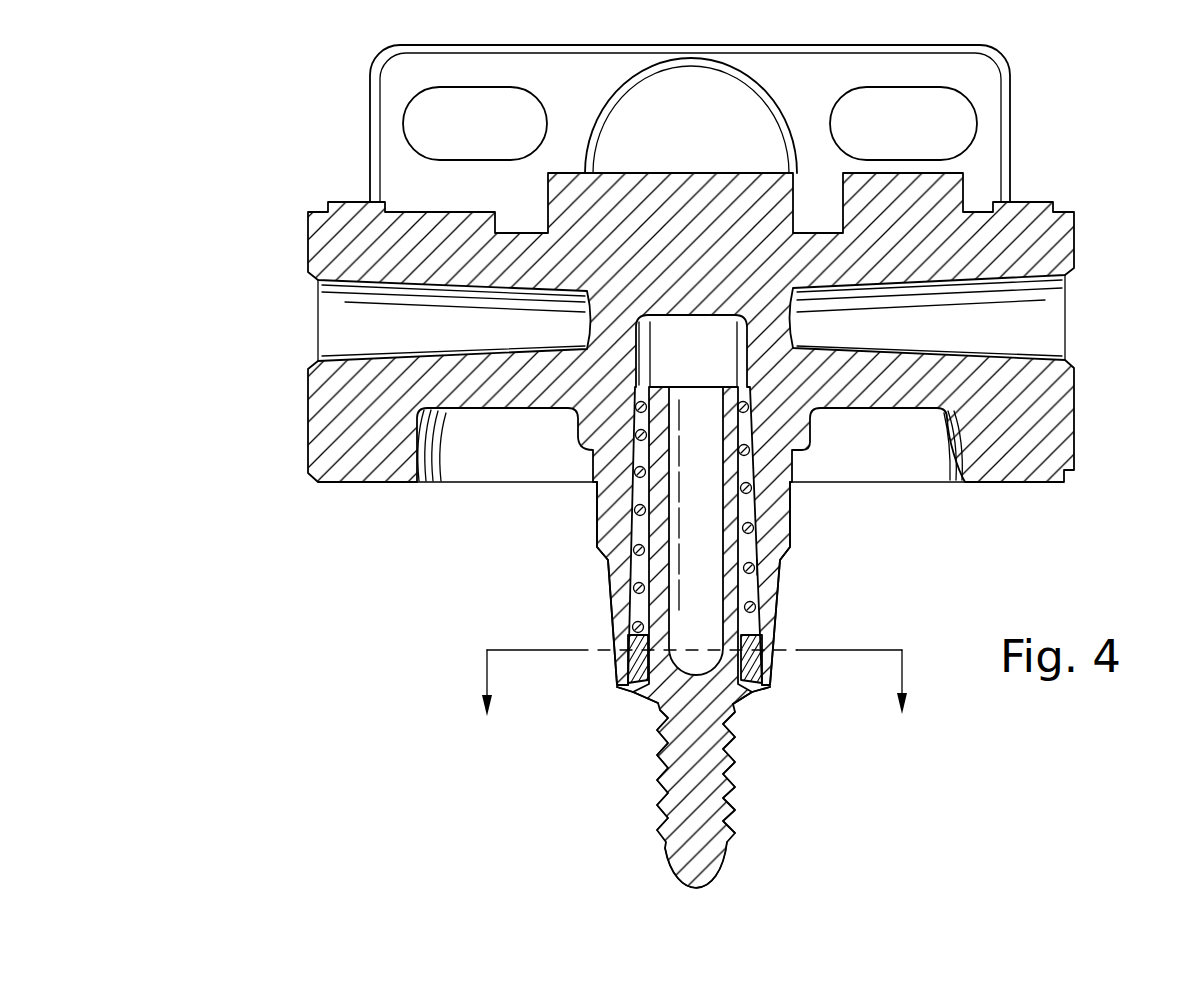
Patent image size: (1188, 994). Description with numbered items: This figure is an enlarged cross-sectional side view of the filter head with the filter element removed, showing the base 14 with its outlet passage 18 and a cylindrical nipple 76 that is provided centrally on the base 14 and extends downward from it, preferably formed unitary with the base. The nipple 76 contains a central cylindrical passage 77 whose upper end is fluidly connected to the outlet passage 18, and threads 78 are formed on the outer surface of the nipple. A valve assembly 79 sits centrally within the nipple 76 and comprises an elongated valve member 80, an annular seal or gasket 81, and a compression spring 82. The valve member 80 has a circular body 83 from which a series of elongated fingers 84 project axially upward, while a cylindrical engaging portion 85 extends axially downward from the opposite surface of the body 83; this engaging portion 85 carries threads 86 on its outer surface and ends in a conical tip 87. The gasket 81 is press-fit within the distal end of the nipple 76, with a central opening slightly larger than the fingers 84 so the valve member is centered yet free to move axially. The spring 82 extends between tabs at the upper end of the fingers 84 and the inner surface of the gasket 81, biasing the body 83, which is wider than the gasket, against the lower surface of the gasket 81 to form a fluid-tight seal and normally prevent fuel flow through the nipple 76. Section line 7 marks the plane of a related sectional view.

The base 14 is at (1064, 243).
The outlet passage 18 is at (313, 313).
The central cylindrical passage 77 is at (706, 368).
The cylindrical nipple 76 is at (586, 538).
The threads 78 is at (780, 530).
The elongated fingers 84 is at (655, 493).
The compression spring 82 is at (747, 565).
The circular body 83 is at (625, 686).
The annular seal or gasket 81 is at (767, 663).
The valve member 80 is at (633, 690).
The valve assembly 79 is at (752, 705).
The threads 86 is at (655, 772).
The cylindrical engaging portion 85 is at (728, 817).
The conical tip 87 is at (713, 867).
The section line 7- 7 is at (693, 683).